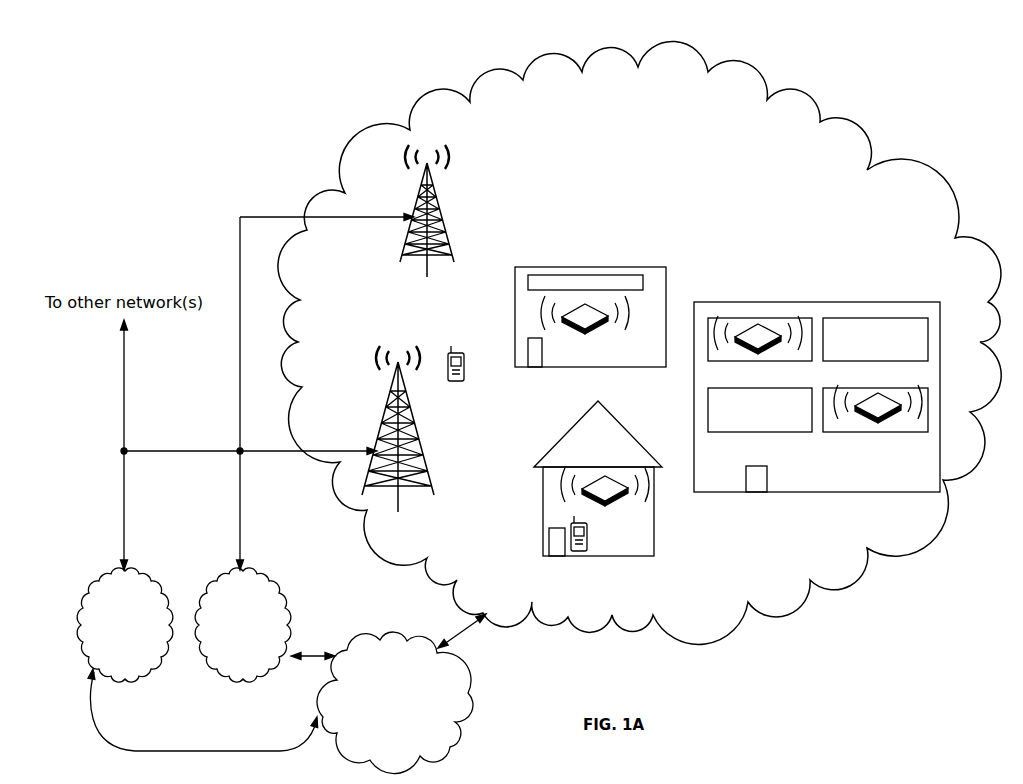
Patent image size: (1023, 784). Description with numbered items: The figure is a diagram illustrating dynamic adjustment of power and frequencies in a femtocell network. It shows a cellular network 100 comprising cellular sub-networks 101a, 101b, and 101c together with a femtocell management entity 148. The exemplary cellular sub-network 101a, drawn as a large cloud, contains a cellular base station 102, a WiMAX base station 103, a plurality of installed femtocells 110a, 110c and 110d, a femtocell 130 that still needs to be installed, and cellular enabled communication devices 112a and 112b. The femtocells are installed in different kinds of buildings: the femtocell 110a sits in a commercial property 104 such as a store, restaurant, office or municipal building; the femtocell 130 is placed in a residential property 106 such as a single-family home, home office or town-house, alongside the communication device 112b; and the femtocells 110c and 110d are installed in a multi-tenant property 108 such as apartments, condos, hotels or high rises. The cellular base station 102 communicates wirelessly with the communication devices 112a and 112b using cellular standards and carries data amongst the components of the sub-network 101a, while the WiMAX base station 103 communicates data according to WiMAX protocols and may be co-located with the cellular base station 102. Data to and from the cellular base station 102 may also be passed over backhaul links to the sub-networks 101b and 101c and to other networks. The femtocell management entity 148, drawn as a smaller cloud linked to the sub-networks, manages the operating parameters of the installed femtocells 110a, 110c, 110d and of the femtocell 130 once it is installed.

The cellular network 100 is at (104, 94).
The cellular sub-network 101a is at (491, 72).
The cellular sub-network 101b is at (128, 682).
The cellular sub-network 101c is at (246, 682).
The cellular base station 102 is at (417, 441).
The WiMAX base station 103 is at (441, 224).
The commercial property 104 is at (543, 267).
The residential property 106 is at (572, 428).
The multi-tenant property 108 is at (942, 331).
The installed femtocell 110a is at (596, 331).
The installed femtocell 110c is at (766, 351).
The installed femtocell 110d is at (886, 419).
The cellular enabled communication device 112a is at (457, 352).
The cellular enabled communication device 112b is at (585, 552).
The femtocell 130 is at (608, 502).
The femtocell management entity 148 is at (395, 642).